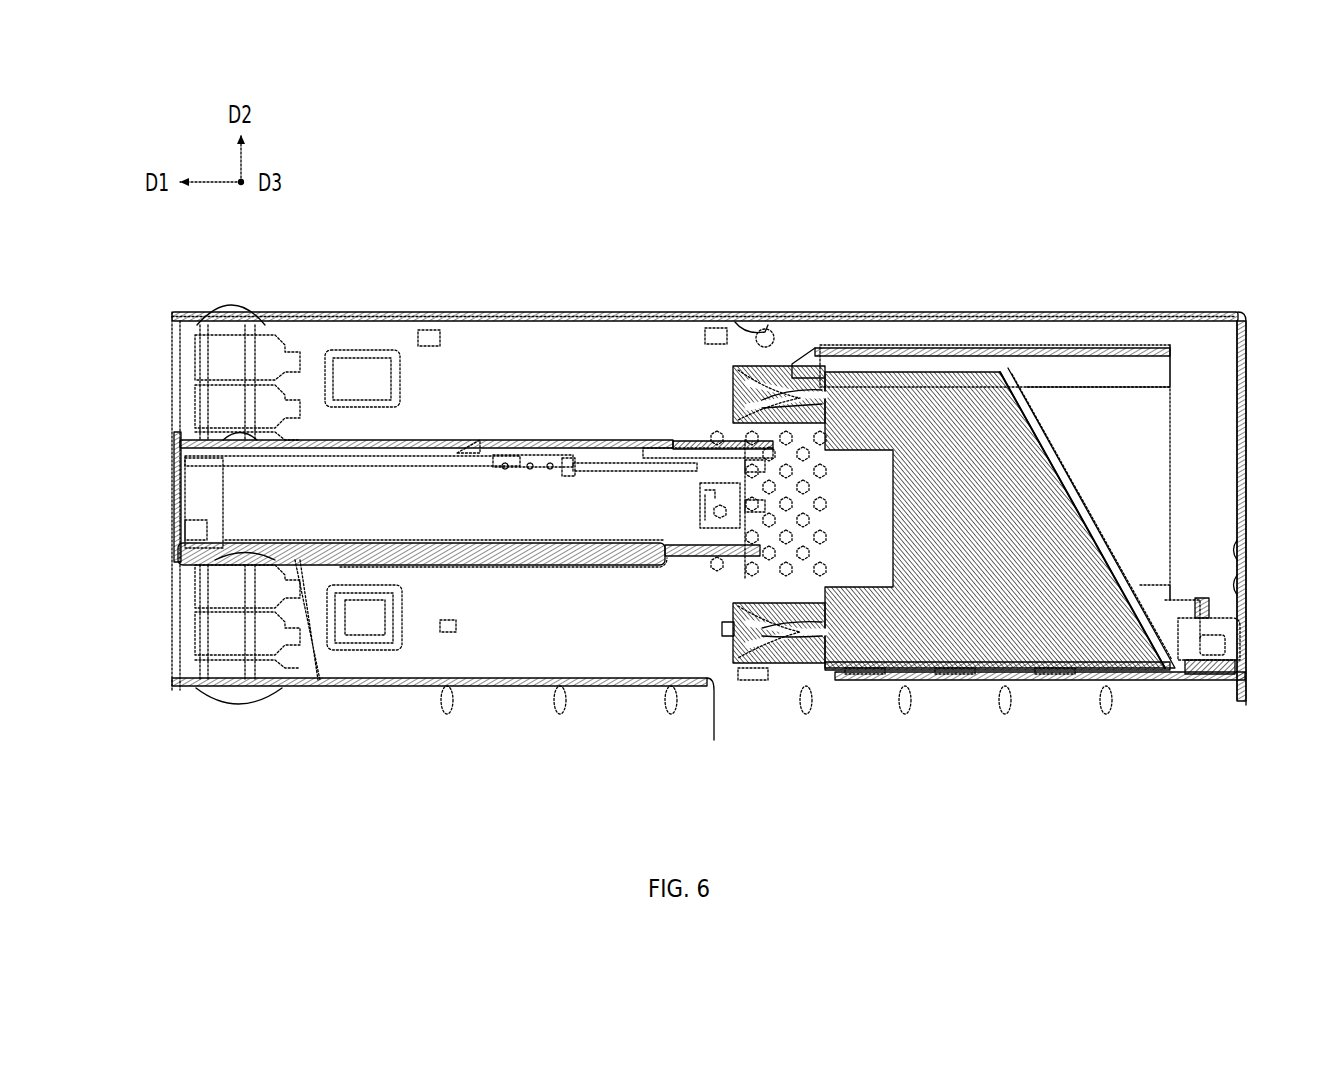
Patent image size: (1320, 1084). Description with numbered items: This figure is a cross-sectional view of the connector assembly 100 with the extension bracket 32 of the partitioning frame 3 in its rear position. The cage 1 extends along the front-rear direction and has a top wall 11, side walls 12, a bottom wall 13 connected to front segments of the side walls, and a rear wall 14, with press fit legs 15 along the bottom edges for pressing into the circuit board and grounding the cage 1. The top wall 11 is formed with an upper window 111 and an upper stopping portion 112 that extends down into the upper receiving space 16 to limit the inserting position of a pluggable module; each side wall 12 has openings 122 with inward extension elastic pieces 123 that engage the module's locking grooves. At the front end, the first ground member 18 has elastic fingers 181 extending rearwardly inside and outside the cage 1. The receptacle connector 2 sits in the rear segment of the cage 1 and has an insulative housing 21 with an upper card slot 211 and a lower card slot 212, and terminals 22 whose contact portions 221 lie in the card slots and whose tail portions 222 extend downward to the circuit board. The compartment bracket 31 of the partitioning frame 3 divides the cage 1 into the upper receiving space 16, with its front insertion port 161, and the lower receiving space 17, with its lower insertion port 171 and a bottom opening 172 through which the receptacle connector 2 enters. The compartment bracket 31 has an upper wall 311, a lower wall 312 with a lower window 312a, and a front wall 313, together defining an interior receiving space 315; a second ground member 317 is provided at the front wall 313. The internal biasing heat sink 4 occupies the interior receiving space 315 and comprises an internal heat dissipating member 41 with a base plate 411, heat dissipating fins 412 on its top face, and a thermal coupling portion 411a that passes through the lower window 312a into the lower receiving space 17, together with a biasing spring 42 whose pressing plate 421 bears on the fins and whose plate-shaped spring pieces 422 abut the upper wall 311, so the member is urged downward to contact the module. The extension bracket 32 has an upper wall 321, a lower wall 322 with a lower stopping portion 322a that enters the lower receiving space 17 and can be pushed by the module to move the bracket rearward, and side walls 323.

The connector assembly 100 is at (500, 173).
The cage 1 is at (530, 308).
The top wall 11 is at (266, 340).
The upper window 111 is at (300, 321).
The upper stopping portion 112 is at (740, 321).
The side wall 12 is at (594, 340).
The bottom wall 13 is at (503, 688).
The rear wall 14 is at (1246, 411).
The press fit leg 15 is at (672, 703).
The upper receiving space 16 is at (634, 358).
The insertion port 161 is at (176, 324).
The lower receiving space 17 is at (603, 648).
The lower insertion port 171 is at (230, 683).
The bottom opening 172 is at (712, 693).
The first ground member 18 is at (230, 345).
The elastic finger 181 is at (262, 335).
The opening 122 is at (408, 623).
The inward extension elastic piece 123 is at (360, 625).
The receptacle connector 2 is at (926, 345).
The housing 21 is at (905, 415).
The upper card slot 211 is at (732, 388).
The lower card slot 212 is at (730, 645).
The terminal 22 is at (990, 366).
The contact portion 221 is at (780, 420).
The tail portion 222 is at (1052, 688).
The partitioning frame 3 is at (443, 420).
The compartment bracket 31 is at (450, 440).
The upper wall 311 is at (410, 440).
The lower wall 312 is at (300, 560).
The lower window 312a is at (320, 585).
The front wall 313 is at (180, 492).
The interior receiving space 315 is at (518, 450).
The second ground member 317 is at (176, 436).
The extension bracket 32 is at (698, 440).
The upper wall 321 is at (682, 438).
The lower wall 322 is at (755, 578).
The lower stopping portion 322a is at (770, 565).
The side wall 323 is at (700, 490).
The internal biasing heat sink 4 is at (500, 570).
The internal heat dissipating member 41 is at (482, 568).
The base plate 411 is at (440, 550).
The thermal coupling portion 411a is at (545, 567).
The heat dissipating fin 412 is at (575, 508).
The biasing spring 42 is at (392, 455).
The pressing plate 421 is at (452, 466).
The plate-shaped spring piece 422 is at (488, 446).